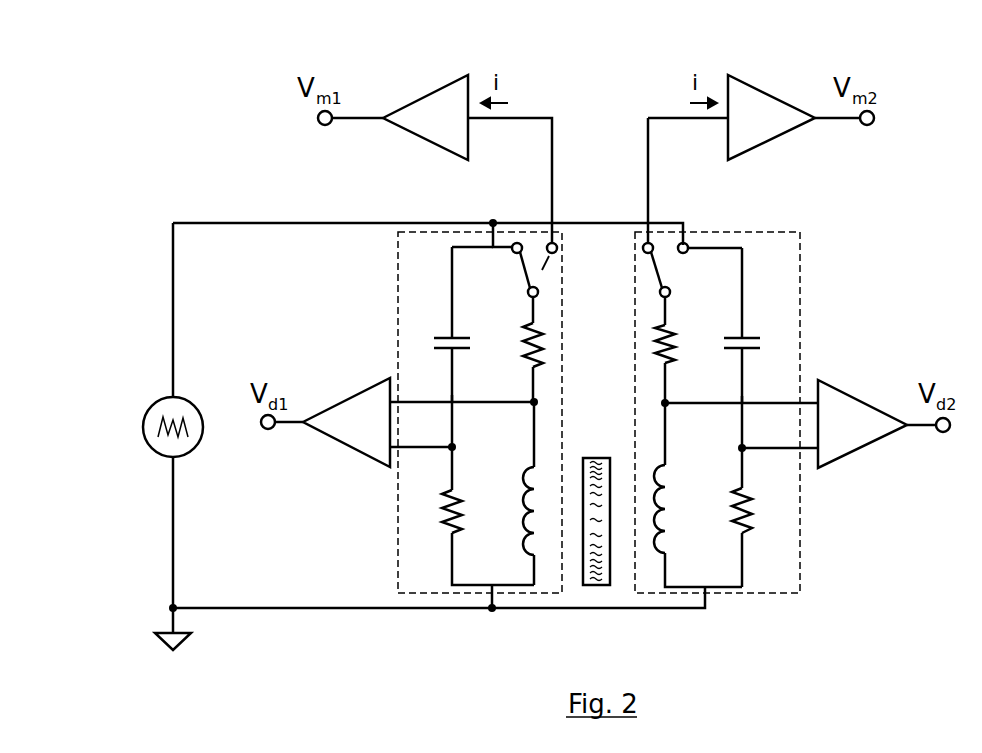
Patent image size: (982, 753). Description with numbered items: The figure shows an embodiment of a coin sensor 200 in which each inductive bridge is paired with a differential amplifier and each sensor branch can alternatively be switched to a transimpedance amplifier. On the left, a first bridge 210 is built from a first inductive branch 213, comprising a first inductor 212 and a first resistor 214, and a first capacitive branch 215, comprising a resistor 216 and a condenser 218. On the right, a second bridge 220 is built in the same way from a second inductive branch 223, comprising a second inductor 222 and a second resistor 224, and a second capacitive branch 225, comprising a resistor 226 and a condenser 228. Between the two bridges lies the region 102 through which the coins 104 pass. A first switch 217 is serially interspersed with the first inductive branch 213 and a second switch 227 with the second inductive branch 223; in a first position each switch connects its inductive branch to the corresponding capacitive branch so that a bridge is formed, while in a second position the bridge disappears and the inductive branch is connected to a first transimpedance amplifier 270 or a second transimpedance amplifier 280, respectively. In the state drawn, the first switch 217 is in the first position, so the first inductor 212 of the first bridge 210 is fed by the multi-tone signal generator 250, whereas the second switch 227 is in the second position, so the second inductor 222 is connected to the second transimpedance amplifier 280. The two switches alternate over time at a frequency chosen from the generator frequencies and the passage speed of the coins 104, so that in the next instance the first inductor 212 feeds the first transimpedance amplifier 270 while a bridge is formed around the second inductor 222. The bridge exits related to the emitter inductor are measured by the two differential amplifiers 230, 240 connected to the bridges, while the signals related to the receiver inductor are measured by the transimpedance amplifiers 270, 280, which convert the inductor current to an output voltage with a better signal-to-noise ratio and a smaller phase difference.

The coin sensor 200 is at (228, 88).
The sample / region of interest 102 is at (592, 360).
The coins 104 is at (603, 587).
The first bridge 210 is at (397, 520).
The first inductor 212 is at (522, 530).
The first inductive branch 213 is at (530, 436).
The first resistor 214 is at (525, 355).
The first capacitive branch 215 is at (450, 398).
The resistor 216 is at (459, 490).
The first switch 217 is at (519, 268).
The condenser 218 is at (448, 336).
The second bridge 220 is at (802, 557).
The second inductor 222 is at (665, 535).
The second inductive branch 223 is at (663, 462).
The second resistor 224 is at (672, 361).
The second capacitive branch 225 is at (740, 389).
The resistor 226 is at (748, 496).
The second switch 227 is at (668, 262).
The condenser 228 is at (745, 335).
The differential amplifier 230 is at (356, 430).
The differential amplifier 240 is at (855, 437).
The multi-tone signal generator 250 is at (163, 447).
The first transimpedance amplifier 270 is at (430, 123).
The second transimpedance amplifier 280 is at (768, 122).